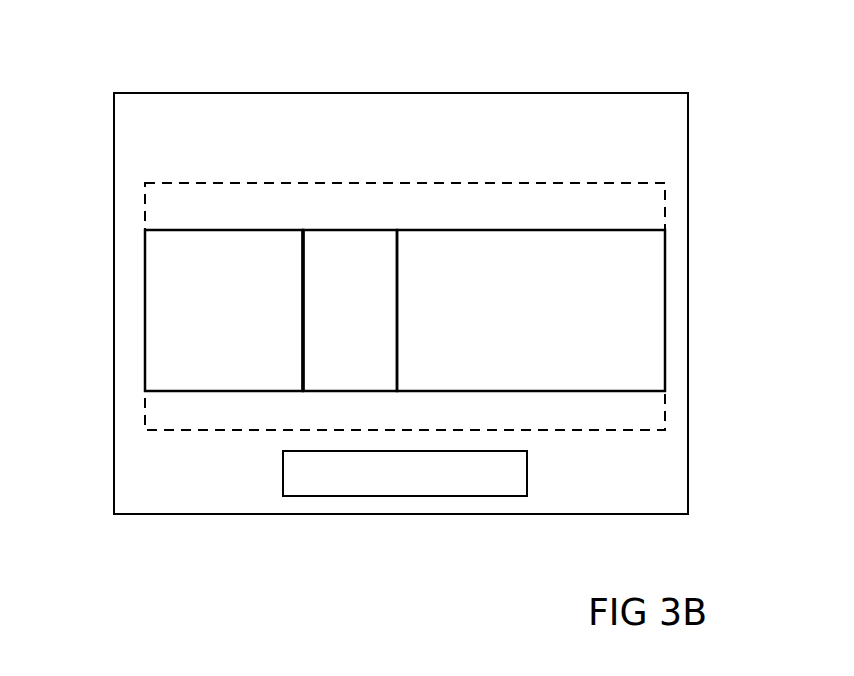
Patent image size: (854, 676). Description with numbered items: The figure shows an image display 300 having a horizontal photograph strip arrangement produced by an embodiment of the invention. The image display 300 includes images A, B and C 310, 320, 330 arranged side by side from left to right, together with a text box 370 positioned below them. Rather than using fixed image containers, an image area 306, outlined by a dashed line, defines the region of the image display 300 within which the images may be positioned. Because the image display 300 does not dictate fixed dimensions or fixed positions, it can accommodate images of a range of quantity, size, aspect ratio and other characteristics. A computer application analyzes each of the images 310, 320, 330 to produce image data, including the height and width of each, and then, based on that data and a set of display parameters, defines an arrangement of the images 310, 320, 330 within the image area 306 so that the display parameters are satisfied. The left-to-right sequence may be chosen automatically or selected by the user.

The image display 300 is at (173, 93).
The image area 306 is at (220, 430).
The image A 310 is at (263, 230).
The image B 320 is at (357, 230).
The image C 330 is at (530, 230).
The text box 370 is at (345, 497).